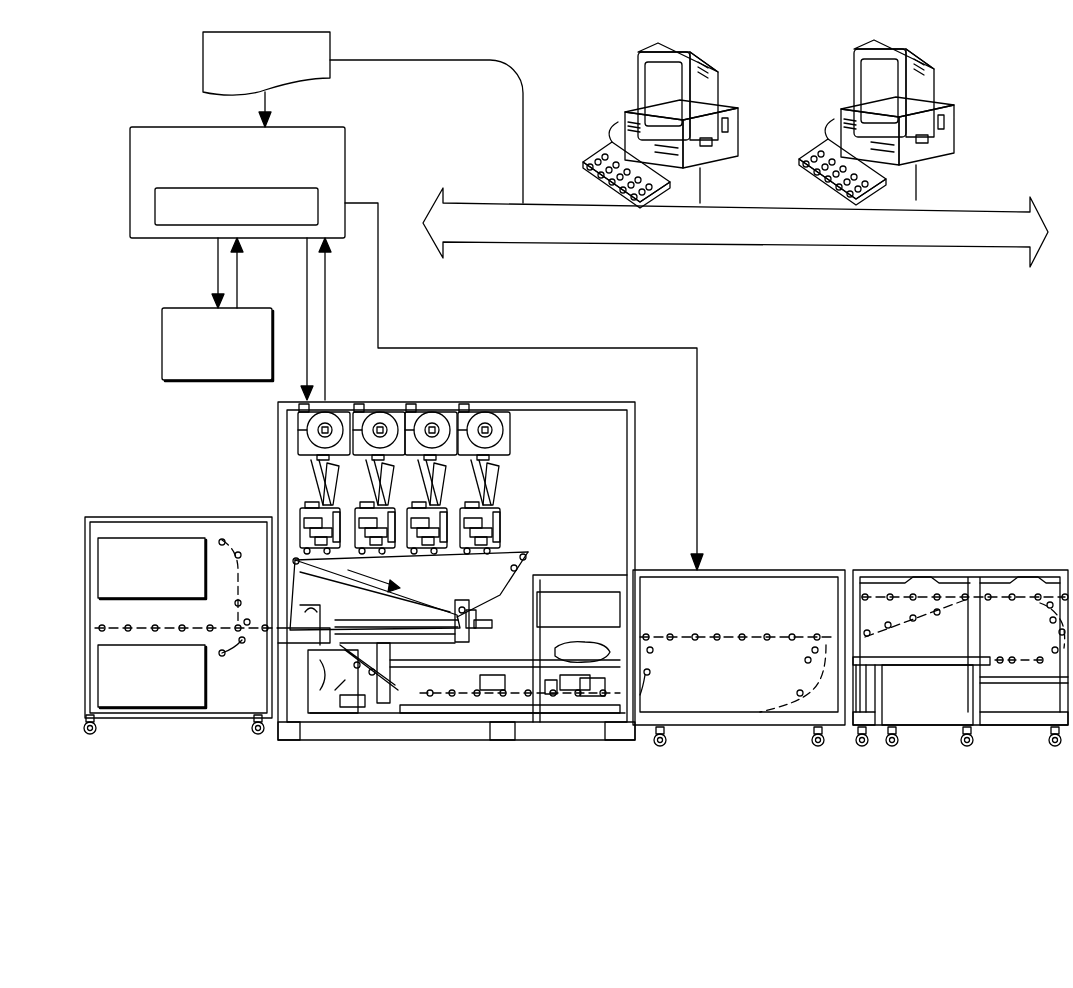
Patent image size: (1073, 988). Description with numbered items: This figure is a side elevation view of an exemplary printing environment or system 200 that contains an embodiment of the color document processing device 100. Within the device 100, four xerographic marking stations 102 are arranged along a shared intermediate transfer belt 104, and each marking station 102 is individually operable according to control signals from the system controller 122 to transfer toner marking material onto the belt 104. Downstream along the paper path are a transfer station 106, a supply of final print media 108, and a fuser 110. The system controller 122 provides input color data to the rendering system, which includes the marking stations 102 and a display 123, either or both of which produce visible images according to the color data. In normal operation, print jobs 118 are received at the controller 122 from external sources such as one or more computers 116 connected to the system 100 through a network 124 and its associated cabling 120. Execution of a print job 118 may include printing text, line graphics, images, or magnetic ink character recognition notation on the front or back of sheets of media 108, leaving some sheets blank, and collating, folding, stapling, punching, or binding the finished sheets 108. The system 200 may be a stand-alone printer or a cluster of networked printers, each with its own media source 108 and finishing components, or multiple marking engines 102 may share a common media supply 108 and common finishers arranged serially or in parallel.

The printing environment or system 200 is at (86, 124).
The color processing device 100 is at (278, 433).
The xerographic marking stations 102 is at (478, 532).
The intermediate transfer belt 104 is at (345, 578).
The transfer station 106 is at (460, 602).
The supply of final print media 108 is at (145, 598).
The fuser 110 is at (633, 617).
The computers 116 is at (720, 82).
The print job 118 is at (330, 43).
The cabling 120 is at (523, 172).
The system controller 122 is at (130, 163).
The display 123 is at (162, 343).
The network 124 is at (200, 188).